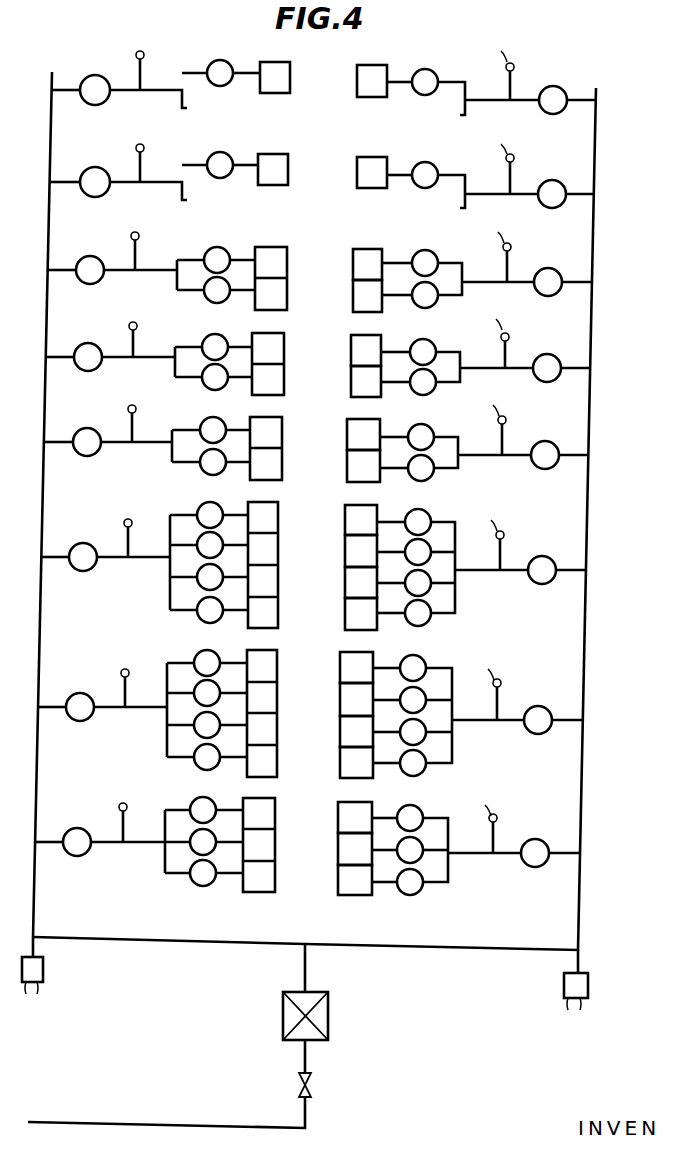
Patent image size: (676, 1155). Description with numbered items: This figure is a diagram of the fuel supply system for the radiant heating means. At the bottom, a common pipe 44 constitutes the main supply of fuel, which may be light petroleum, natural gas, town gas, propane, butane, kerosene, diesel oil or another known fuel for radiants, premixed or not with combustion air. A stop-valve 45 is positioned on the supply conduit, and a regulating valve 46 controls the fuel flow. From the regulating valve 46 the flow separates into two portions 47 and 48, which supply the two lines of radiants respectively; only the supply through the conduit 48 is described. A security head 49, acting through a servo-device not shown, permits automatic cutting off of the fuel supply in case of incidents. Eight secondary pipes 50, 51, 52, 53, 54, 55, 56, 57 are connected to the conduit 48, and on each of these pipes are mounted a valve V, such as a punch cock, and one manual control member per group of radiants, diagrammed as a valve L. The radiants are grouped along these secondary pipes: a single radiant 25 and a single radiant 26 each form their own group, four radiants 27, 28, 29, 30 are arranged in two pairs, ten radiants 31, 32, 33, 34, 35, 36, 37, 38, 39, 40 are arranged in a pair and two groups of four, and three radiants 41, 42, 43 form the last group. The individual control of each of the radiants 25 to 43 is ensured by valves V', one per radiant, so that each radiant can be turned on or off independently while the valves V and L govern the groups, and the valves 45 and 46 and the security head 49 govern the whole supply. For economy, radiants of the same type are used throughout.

The radiant 25 is at (357, 83).
The radiant 26 is at (357, 175).
The radiant 27 is at (353, 263).
The radiant 28 is at (353, 295).
The radiant 29 is at (351, 352).
The radiant 30 is at (351, 382).
The radiant 31 is at (347, 437).
The radiant 32 is at (347, 468).
The radiant 33 is at (345, 522).
The radiant 34 is at (345, 552).
The radiant 35 is at (345, 583).
The radiant 36 is at (345, 613).
The radiant 37 is at (340, 668).
The radiant 38 is at (340, 700).
The radiant 39 is at (340, 732).
The radiant 40 is at (340, 763).
The radiant 41 is at (338, 818).
The radiant 42 is at (338, 850).
The radiant 43 is at (338, 882).
The common pipe 44 is at (117, 1124).
The stop-valve 45 is at (311, 1085).
The regulating valve 46 is at (283, 1028).
The fuel flow portion 47 is at (166, 940).
The fuel flow portion 48 is at (578, 898).
The security head 49 is at (588, 987).
The secondary pipe 50 is at (579, 96).
The secondary pipe 51 is at (577, 191).
The secondary pipe 52 is at (573, 280).
The secondary pipe 53 is at (573, 366).
The secondary pipe 54 is at (571, 454).
The secondary pipe 55 is at (567, 567).
The secondary pipe 56 is at (562, 714).
The secondary pipe 57 is at (560, 850).